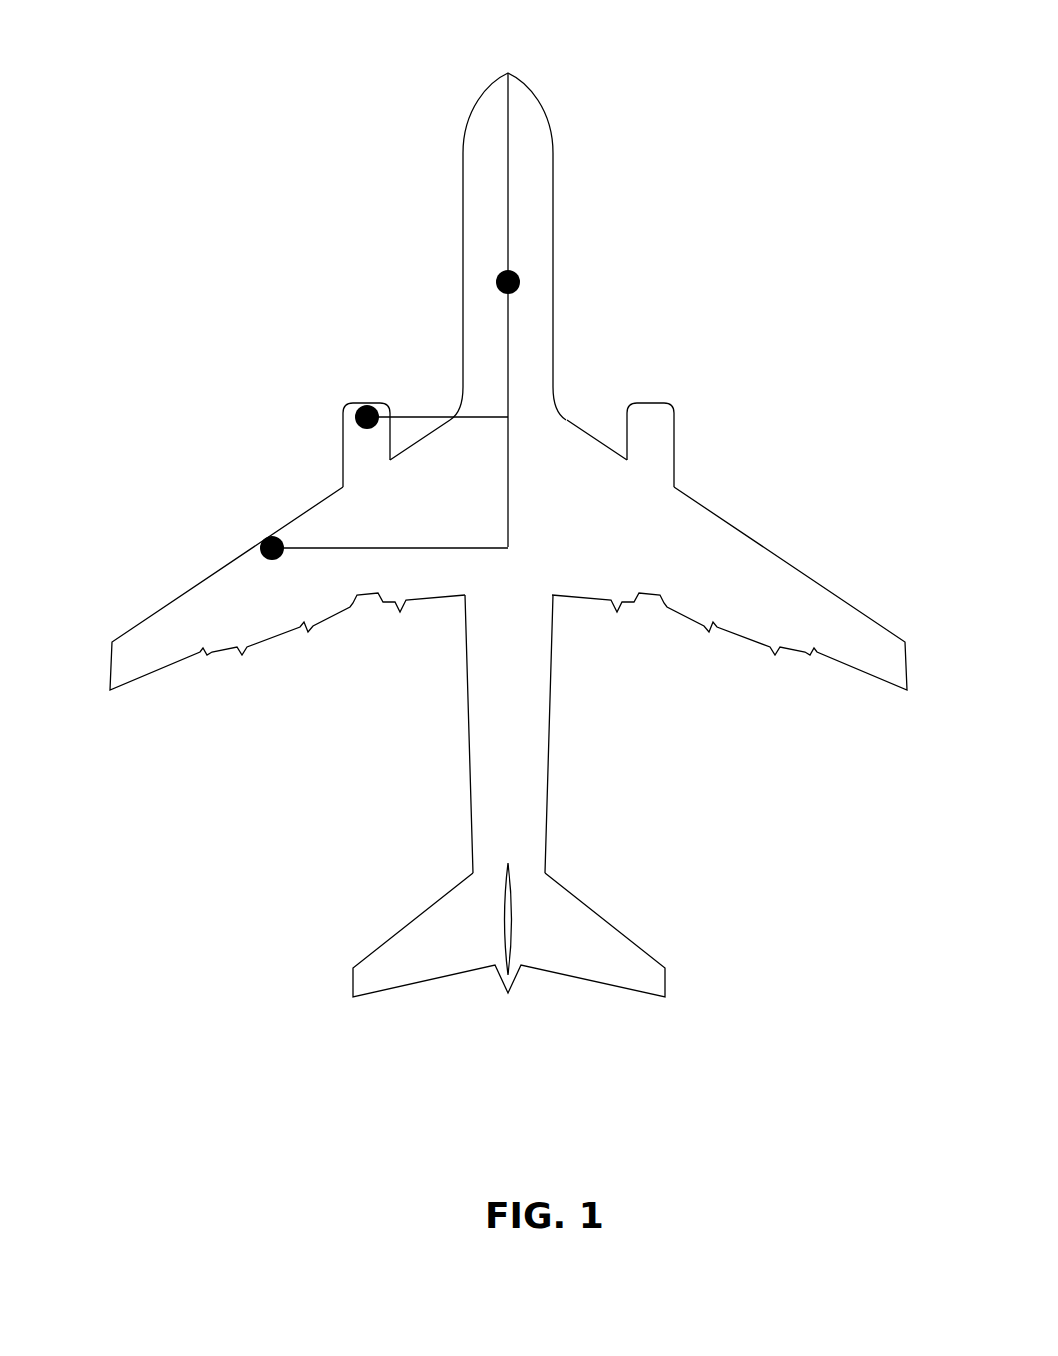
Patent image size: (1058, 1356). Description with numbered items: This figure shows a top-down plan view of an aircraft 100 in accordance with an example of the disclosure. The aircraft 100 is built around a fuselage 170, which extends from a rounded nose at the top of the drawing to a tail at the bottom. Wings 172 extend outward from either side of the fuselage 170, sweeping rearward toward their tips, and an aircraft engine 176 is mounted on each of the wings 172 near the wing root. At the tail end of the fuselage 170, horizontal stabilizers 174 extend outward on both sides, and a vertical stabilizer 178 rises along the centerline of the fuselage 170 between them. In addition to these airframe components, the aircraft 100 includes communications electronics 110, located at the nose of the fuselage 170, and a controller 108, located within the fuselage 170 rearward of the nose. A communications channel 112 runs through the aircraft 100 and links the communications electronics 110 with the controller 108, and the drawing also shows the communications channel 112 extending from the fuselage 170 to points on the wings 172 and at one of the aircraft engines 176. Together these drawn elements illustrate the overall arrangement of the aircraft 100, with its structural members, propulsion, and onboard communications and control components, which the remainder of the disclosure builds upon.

The aircraft 100 is at (322, 70).
The controller 108 is at (554, 285).
The communications electronics 110 is at (508, 213).
The communications channel 112 is at (398, 328).
The fuselage 170 is at (460, 260).
The wings 172 is at (163, 607).
The horizontal stabilizers 174 is at (402, 935).
The aircraft engines 176 is at (348, 405).
The vertical stabilizer 178 is at (505, 918).